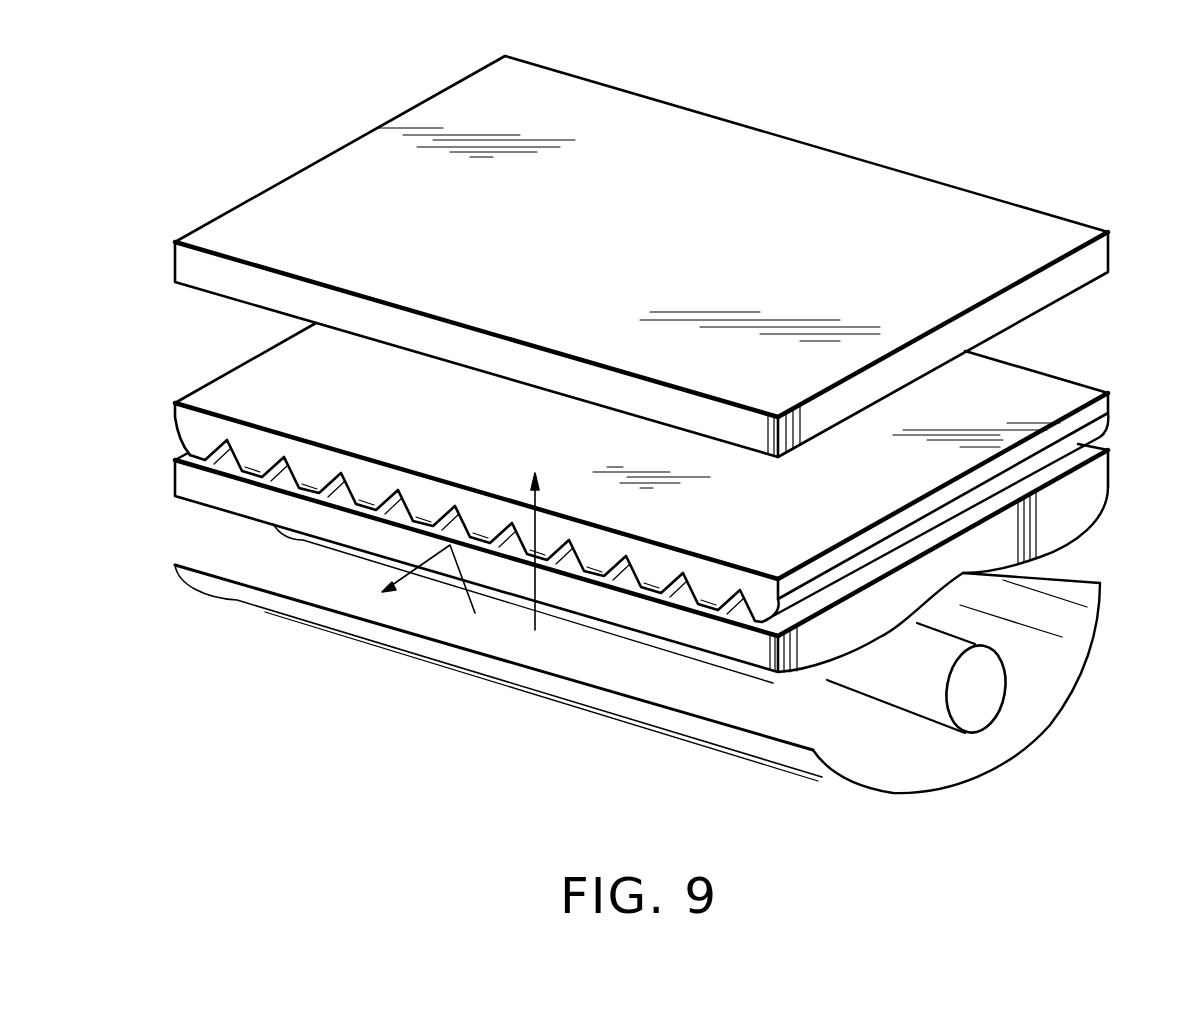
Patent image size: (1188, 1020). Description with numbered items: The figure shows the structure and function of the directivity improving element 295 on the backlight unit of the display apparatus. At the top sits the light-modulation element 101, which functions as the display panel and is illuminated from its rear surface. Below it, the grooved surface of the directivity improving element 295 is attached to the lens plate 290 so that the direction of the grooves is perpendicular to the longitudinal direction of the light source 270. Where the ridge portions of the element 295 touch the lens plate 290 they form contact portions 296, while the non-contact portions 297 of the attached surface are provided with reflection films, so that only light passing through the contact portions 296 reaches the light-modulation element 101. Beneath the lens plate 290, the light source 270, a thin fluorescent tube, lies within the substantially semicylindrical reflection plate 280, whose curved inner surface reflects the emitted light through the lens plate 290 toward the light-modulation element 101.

The light-modulation element 101 is at (1028, 217).
The directivity improving element 295 is at (1080, 393).
The contact portions 296 is at (365, 507).
The non-contact portions 297 is at (465, 520).
The lens plate 290 is at (1093, 497).
The reflection plate 280 is at (662, 693).
The light source 270 is at (987, 705).